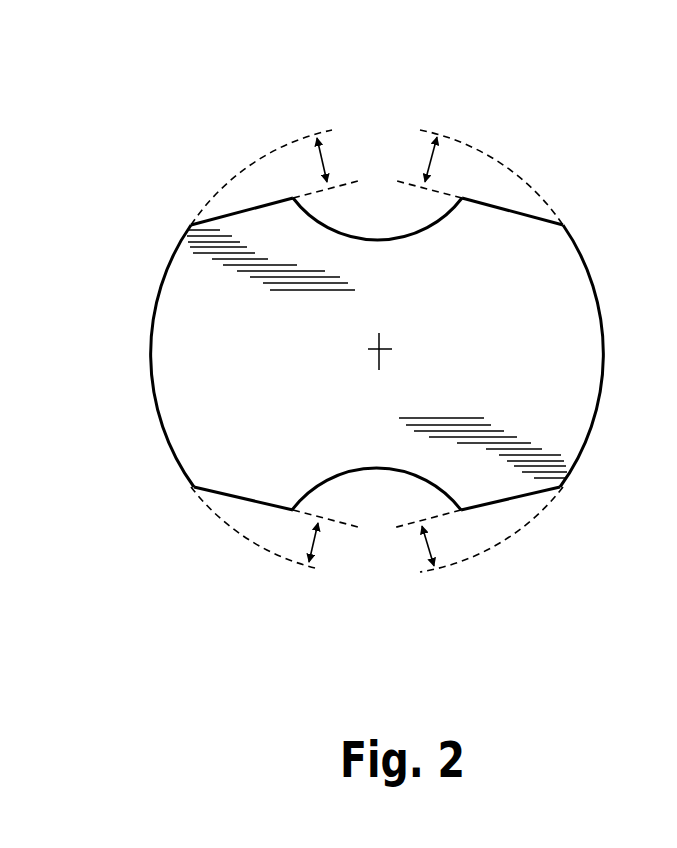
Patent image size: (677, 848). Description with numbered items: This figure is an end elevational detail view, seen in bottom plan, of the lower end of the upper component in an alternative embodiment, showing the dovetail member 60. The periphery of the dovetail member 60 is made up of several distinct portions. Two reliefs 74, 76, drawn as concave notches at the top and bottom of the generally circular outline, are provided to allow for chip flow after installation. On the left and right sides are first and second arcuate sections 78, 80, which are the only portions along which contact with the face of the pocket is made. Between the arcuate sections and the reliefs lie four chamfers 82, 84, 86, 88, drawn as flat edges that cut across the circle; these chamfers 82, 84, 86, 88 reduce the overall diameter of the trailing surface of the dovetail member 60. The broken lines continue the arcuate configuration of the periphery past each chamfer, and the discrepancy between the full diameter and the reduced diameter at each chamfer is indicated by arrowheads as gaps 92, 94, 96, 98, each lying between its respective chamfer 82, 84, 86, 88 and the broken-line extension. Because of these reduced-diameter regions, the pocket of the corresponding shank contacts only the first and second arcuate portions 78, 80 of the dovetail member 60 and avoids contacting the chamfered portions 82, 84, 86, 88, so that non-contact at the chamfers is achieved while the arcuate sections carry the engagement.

The dovetail member 60 is at (168, 459).
The relief 74 is at (372, 241).
The relief 76 is at (384, 467).
The arcuate section 78 is at (158, 297).
The arcuate section 80 is at (583, 258).
The chamfer 82 is at (275, 199).
The chamfer 84 is at (477, 198).
The chamfer 86 is at (497, 507).
The chamfer 88 is at (252, 503).
The gap 92 is at (337, 150).
The gap 94 is at (412, 153).
The gap 96 is at (417, 555).
The gap 98 is at (331, 550).